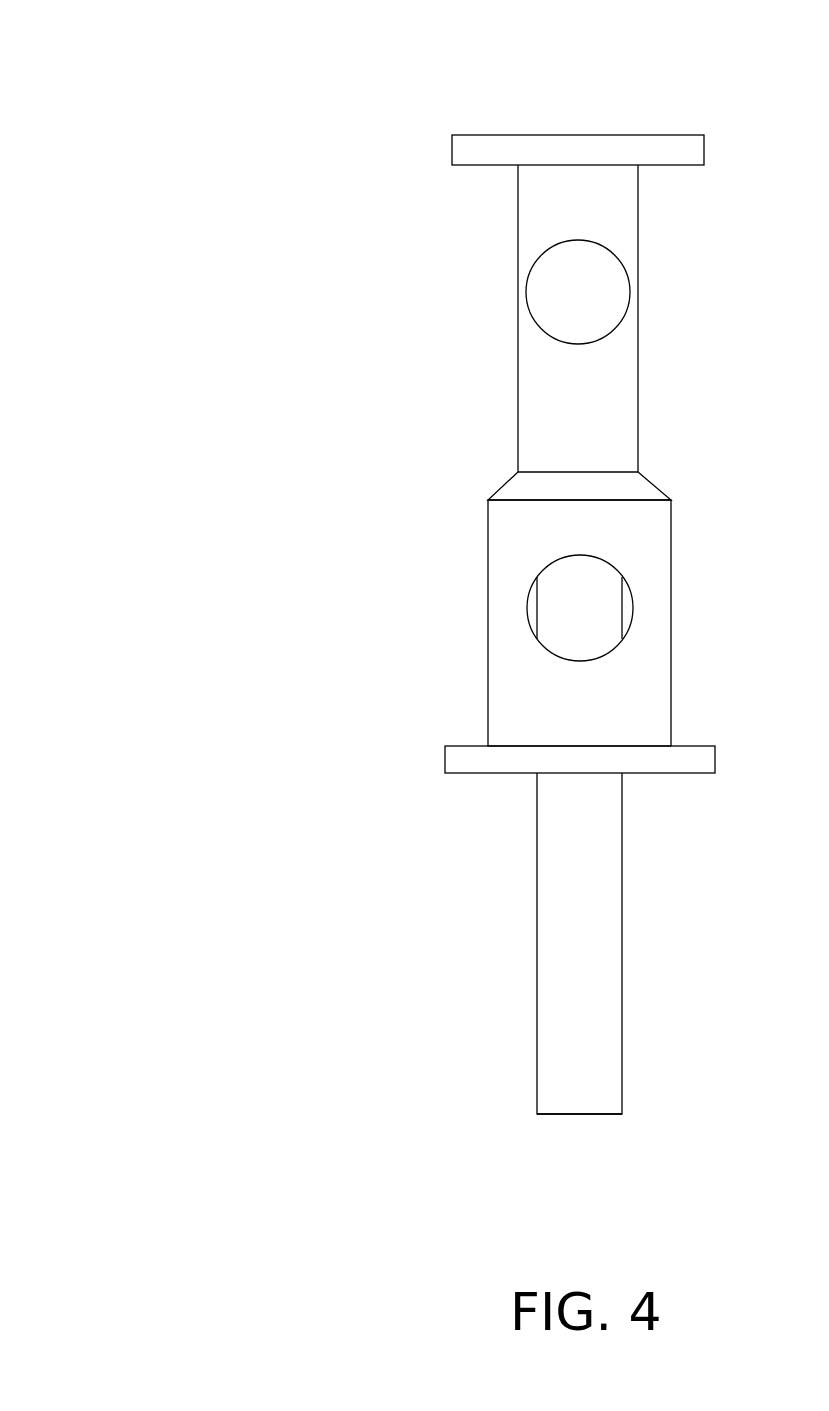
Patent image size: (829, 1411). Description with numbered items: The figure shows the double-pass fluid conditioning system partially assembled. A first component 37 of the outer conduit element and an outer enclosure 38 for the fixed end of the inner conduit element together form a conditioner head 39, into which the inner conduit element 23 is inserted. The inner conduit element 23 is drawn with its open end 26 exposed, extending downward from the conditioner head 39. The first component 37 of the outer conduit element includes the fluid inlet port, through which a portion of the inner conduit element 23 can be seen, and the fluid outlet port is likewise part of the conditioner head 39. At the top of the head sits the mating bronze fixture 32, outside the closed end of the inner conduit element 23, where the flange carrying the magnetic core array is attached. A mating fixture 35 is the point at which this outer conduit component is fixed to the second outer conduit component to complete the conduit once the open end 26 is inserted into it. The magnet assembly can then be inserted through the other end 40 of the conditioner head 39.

The inner conduit element 23 is at (552, 880).
The open end 26 is at (560, 1133).
The mating bronze fixture 32 is at (455, 152).
The mating fixture 35 is at (468, 758).
The first component 37 is at (508, 557).
The outer enclosure 38 is at (535, 397).
The conditioner head 39 is at (262, 312).
The other end 40 is at (532, 104).